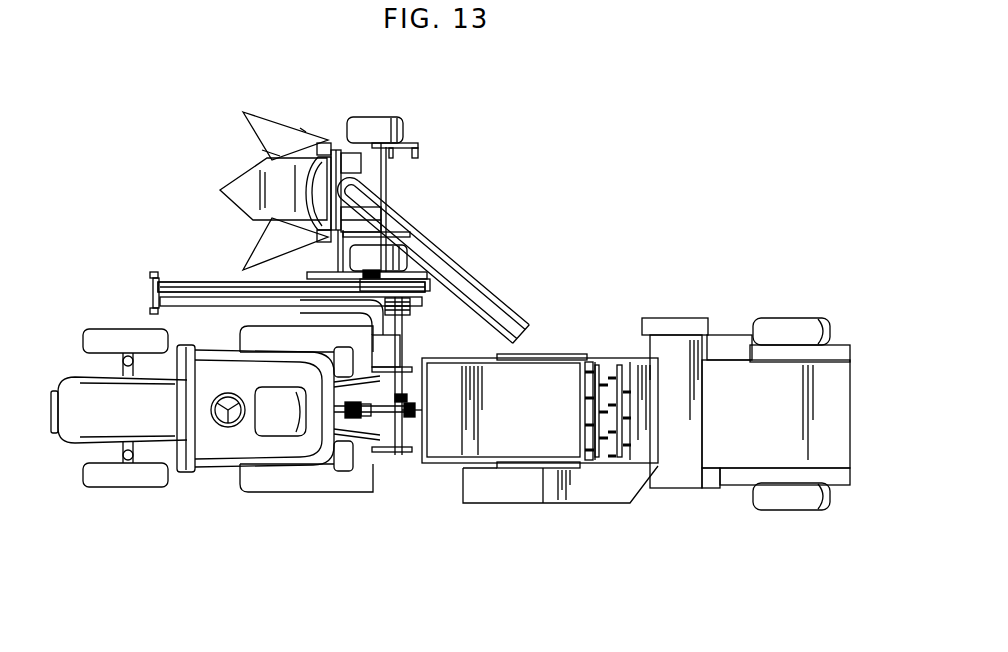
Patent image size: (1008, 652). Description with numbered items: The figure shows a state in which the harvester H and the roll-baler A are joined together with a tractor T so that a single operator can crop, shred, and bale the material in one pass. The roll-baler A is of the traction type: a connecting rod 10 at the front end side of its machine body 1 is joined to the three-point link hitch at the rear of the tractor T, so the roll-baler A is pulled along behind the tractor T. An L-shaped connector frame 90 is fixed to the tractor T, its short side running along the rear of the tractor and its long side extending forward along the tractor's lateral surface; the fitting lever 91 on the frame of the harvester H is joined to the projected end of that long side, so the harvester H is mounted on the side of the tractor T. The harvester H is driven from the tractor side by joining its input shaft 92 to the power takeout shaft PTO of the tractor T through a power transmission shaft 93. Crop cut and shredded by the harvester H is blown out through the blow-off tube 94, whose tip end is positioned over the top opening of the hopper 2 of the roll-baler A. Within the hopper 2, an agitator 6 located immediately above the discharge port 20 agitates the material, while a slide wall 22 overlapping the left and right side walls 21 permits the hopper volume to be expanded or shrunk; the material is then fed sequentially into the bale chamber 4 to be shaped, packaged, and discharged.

The tractor T is at (199, 468).
The power takeout shaft PTO is at (343, 418).
The harvester H is at (394, 197).
The blow-off tube 94 is at (406, 250).
The connector frame 90 is at (193, 308).
The fitting lever 91 is at (201, 283).
The input shaft 92 is at (412, 308).
The power transmission shaft 93 is at (400, 337).
The machine body 1 is at (683, 490).
The hopper 2 is at (532, 352).
The bale chamber 4 is at (830, 372).
The agitator 6 is at (592, 365).
The discharge port 20 is at (605, 370).
The side wall 21 is at (543, 470).
The slide wall 22 is at (484, 470).
The connecting rod 10 is at (414, 420).
The roll-baler A is at (570, 127).